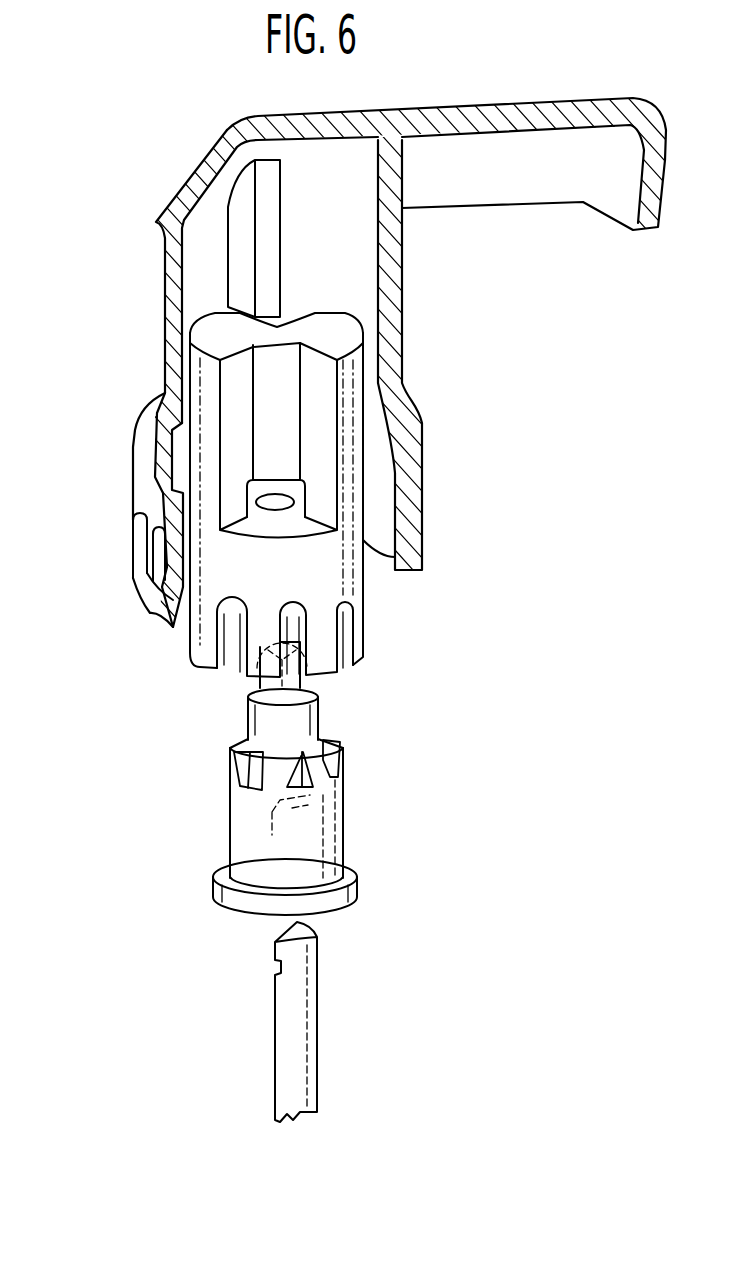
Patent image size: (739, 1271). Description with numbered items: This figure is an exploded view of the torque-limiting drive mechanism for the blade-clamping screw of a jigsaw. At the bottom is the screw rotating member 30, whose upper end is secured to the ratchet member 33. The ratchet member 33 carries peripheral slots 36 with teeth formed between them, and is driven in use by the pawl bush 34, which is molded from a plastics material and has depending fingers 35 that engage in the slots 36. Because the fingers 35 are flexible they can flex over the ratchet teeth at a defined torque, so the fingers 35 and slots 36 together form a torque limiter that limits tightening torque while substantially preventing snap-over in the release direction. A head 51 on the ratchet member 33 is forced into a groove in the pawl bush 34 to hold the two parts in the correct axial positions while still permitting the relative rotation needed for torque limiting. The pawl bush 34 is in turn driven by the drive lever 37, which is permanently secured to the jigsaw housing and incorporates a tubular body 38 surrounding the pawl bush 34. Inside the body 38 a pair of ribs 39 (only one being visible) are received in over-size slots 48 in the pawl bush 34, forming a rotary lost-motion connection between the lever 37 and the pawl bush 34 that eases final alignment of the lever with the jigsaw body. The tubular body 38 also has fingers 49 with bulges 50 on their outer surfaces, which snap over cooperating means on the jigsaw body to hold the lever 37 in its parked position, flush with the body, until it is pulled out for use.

The screw rotating member 30 is at (310, 1037).
The ratchet member 33 is at (238, 823).
The pawl bush 34 is at (337, 572).
The fingers 35 is at (203, 657).
The peripheral slots 36 is at (252, 767).
The drive lever 37 is at (495, 120).
The tubular body 38 is at (168, 293).
The ribs 39 is at (272, 218).
The over-size slots 48 is at (307, 307).
The fingers 49 is at (147, 553).
The bulges 50 is at (133, 588).
The head 51 is at (300, 677).